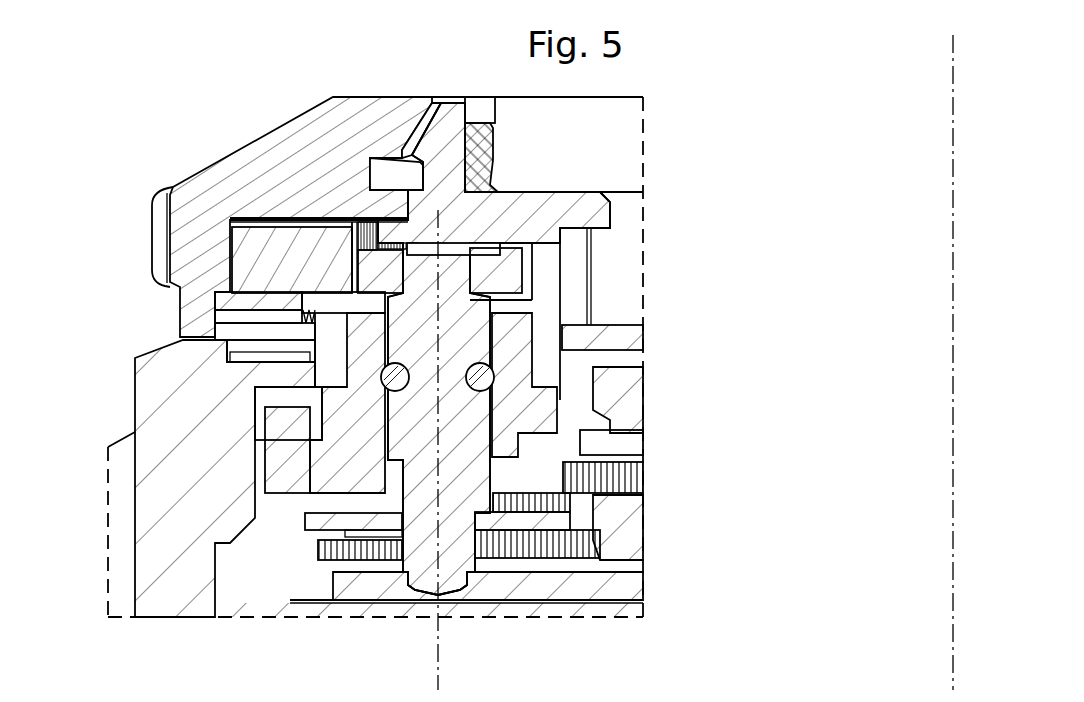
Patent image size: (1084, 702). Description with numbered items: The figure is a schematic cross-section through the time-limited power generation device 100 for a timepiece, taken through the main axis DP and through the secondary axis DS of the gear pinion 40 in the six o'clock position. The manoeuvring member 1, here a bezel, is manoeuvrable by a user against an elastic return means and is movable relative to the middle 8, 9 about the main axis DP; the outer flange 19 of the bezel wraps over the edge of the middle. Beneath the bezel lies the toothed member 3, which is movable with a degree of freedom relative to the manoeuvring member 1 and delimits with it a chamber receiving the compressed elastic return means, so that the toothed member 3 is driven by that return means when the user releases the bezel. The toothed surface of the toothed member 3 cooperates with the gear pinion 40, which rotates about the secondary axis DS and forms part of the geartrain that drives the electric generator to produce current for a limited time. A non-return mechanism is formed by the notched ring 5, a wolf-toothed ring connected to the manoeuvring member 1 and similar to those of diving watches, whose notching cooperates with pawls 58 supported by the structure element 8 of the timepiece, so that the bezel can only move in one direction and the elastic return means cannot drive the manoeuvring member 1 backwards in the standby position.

The time-limited power generation device 100 is at (145, 128).
The manoeuvring member 1 is at (262, 150).
The housing flange 19 is at (158, 216).
The middle 9 is at (432, 135).
The toothed member 3 is at (265, 262).
The notched ring 5 is at (225, 305).
The pawls 58 is at (245, 358).
The structure element 8 is at (178, 517).
The gear pinion 40 is at (502, 270).
The secondary axis DS is at (432, 655).
The main axis DP is at (947, 652).